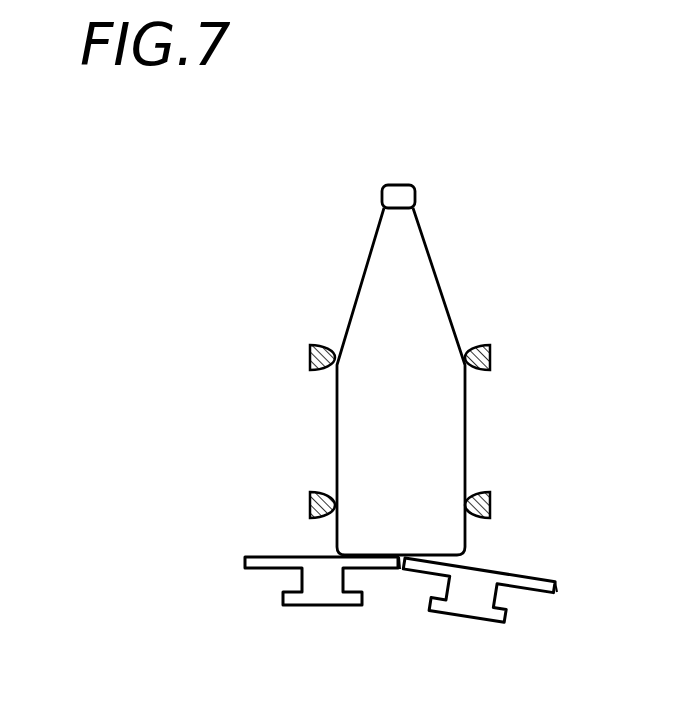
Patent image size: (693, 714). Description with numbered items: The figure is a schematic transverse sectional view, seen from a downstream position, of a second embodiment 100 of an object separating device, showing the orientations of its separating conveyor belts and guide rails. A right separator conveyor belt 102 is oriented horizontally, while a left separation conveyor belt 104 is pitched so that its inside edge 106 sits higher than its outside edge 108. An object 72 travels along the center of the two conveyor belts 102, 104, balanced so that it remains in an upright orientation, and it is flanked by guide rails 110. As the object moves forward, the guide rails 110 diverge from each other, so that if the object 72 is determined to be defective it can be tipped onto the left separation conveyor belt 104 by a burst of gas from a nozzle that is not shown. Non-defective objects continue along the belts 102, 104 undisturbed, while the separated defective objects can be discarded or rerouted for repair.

The second embodiment of an object separating device 100 is at (497, 142).
The object 72 is at (415, 263).
The guide rails 110 is at (313, 348).
The right separator conveyor belt 102 is at (272, 556).
The left separation conveyor belt 104 is at (532, 575).
The inside edge 106 is at (402, 572).
The outside edge 108 is at (560, 588).